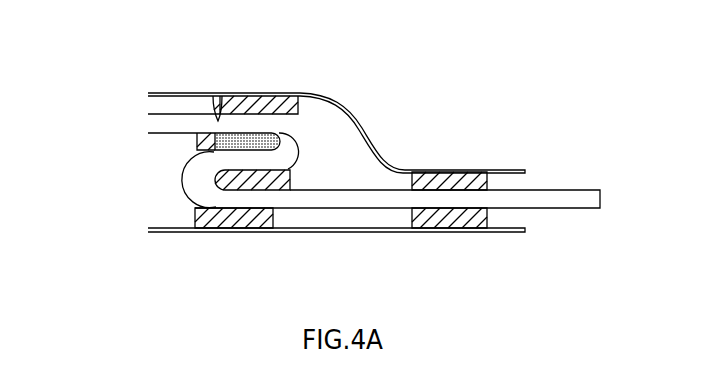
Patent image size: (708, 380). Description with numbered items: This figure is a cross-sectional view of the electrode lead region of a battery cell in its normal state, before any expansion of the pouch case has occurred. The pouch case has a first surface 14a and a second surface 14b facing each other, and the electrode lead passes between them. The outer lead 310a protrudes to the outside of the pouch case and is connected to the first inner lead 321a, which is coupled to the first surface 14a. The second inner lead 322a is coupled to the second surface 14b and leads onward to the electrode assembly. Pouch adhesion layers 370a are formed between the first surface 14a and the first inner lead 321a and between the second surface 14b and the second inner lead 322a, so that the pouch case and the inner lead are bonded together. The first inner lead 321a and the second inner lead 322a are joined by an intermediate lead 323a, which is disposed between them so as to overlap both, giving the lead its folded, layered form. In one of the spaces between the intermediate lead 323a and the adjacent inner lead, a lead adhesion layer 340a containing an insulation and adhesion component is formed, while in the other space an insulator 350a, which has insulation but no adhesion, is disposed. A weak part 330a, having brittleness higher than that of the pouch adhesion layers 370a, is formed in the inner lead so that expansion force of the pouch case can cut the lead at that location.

The first surface 14a is at (400, 232).
The second surface 14b is at (422, 170).
The outer lead 310a is at (576, 190).
The first inner lead 321a is at (296, 196).
The second inner lead 322a is at (263, 110).
The intermediate lead 323a is at (268, 160).
The weak part 330a is at (214, 97).
The lead adhesion layer 340a is at (215, 178).
The insulator 350a is at (277, 138).
The pouch adhesion layer 370a is at (473, 180).